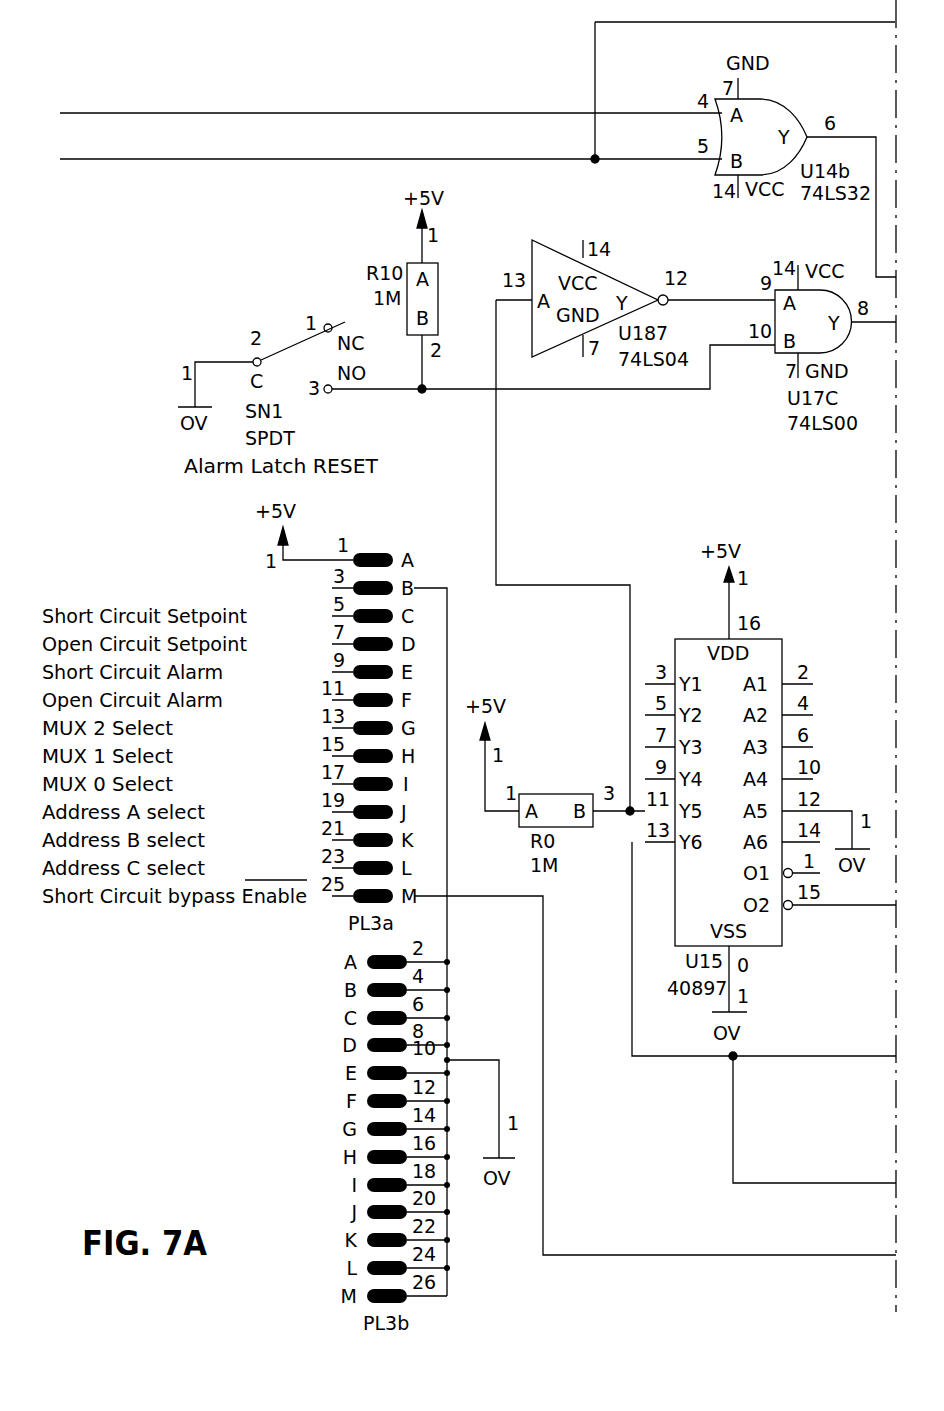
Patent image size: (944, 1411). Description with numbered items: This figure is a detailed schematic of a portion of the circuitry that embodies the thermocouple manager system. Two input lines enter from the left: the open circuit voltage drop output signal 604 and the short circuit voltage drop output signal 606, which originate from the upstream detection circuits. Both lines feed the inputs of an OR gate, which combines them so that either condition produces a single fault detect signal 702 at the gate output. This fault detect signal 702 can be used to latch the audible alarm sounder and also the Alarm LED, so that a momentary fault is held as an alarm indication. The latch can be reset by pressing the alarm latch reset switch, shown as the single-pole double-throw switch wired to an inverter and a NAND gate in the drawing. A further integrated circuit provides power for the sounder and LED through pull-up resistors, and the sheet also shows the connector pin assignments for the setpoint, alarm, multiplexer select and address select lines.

The open circuit voltage drop output signal 604 is at (496, 112).
The short circuit voltage drop output signal 606 is at (541, 162).
The fault detect signal 702 is at (860, 128).